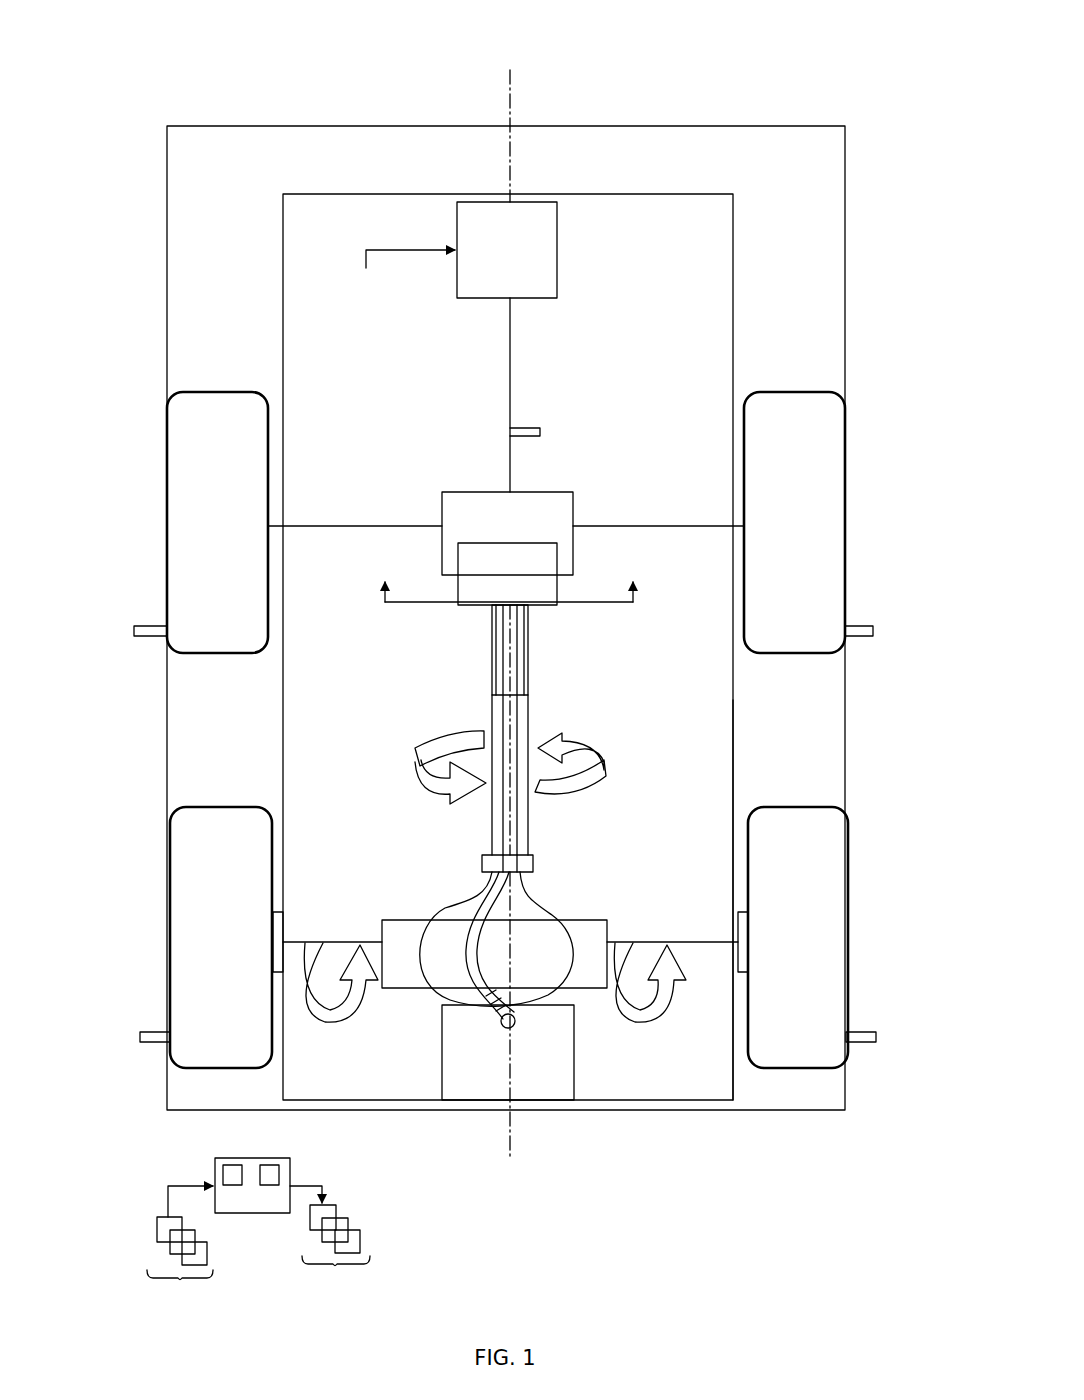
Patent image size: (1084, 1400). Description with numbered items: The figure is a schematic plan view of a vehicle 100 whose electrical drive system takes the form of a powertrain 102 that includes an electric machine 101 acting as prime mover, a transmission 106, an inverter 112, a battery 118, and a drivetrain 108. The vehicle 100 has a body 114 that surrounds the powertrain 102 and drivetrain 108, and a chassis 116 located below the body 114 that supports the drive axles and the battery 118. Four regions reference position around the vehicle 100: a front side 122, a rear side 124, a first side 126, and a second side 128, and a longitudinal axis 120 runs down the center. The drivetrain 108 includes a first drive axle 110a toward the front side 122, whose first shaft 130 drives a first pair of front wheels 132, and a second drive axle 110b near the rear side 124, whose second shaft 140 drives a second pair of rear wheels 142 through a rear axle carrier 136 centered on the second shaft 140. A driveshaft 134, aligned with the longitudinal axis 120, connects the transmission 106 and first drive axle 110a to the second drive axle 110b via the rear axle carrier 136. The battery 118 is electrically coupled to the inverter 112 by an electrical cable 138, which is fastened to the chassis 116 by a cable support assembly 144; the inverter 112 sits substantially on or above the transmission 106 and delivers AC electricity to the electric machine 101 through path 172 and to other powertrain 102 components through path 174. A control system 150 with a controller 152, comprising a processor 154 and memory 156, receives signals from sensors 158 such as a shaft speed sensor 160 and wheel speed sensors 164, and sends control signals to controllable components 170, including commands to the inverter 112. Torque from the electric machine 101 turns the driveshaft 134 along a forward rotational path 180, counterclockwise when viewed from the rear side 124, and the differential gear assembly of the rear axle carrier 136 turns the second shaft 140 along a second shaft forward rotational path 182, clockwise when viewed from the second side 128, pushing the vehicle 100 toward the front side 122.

The vehicle 100 is at (806, 84).
The electric machine 101 is at (507, 250).
The powertrain 102 is at (616, 256).
The transmission 106 is at (490, 492).
The drivetrain 108 is at (614, 720).
The first drive axle 110a is at (370, 470).
The second drive axle 110b is at (372, 878).
The inverter 112 is at (545, 606).
The body 114 is at (167, 248).
The chassis 116 is at (733, 745).
The battery 118 is at (442, 1075).
The longitudinal axis 120 is at (510, 170).
The front side 122 is at (510, 7).
The rear side 124 is at (505, 1241).
The first side 126 is at (108, 809).
The second side 128 is at (878, 781).
The first shaft 130 is at (660, 527).
The front wheels 132 is at (506, 522).
The driveshaft 134 is at (492, 702).
The rear axle carrier 136 is at (452, 905).
The electrical cable 138 is at (540, 740).
The second shaft 140 is at (697, 945).
The rear wheels 142 is at (509, 937).
The cable support assembly 144 is at (492, 660).
The control system 150 is at (128, 1186).
The controller 152 is at (222, 1158).
The processor 154 is at (223, 1180).
The memory 156 is at (279, 1178).
The sensors 158 is at (180, 1263).
The shaft speed sensor 160 is at (540, 432).
The wheel speed sensor 164 is at (134, 634).
The controllable components 170 is at (336, 1250).
The path 172 is at (440, 250).
The path 174 is at (610, 604).
The forward rotational path 180 is at (415, 750).
The second shaft forward rotational path 182 is at (325, 1015).